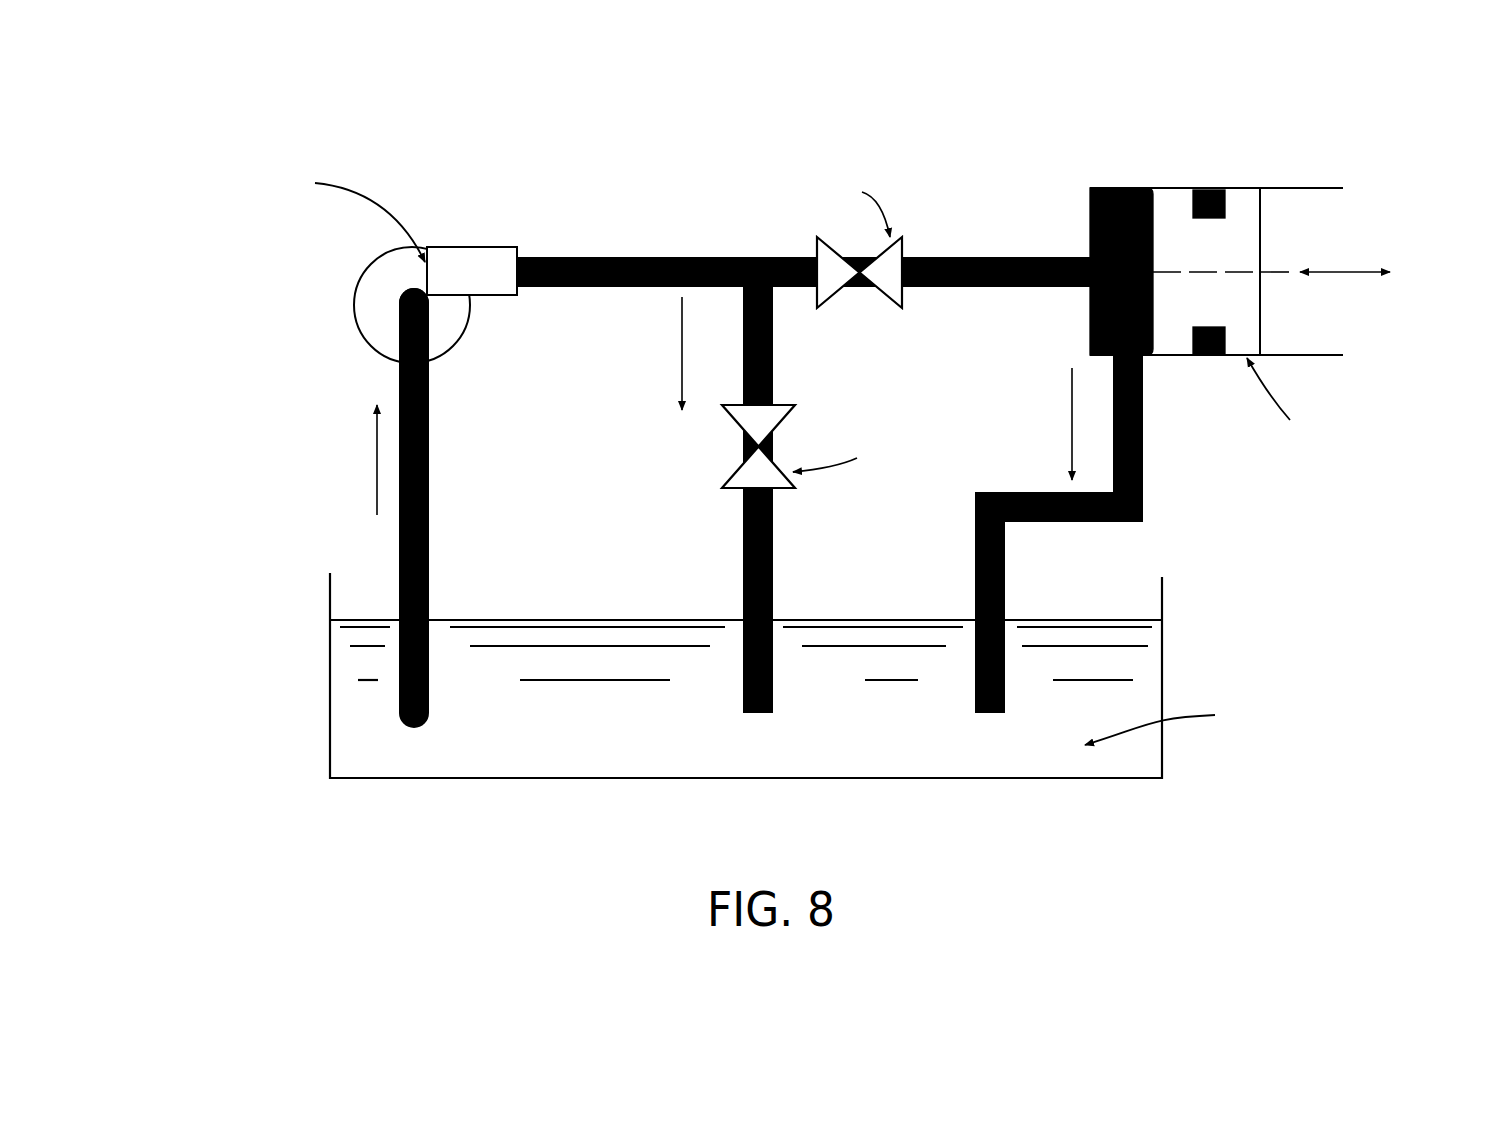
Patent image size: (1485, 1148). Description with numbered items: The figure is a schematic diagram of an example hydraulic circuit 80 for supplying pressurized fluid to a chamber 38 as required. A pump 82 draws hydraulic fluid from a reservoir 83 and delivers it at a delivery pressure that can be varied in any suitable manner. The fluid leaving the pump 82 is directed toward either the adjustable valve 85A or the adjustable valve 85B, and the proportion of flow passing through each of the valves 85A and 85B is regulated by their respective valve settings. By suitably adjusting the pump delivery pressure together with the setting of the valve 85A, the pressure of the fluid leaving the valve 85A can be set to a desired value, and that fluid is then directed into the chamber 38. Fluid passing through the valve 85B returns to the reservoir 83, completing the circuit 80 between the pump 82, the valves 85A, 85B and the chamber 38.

The pump 82 is at (372, 300).
The reservoir 83 is at (343, 694).
The adjustable valve 85A is at (892, 228).
The adjustable valve 85B is at (730, 450).
The chamber 38 is at (1118, 188).
The hydraulic circuit 80 is at (1175, 185).